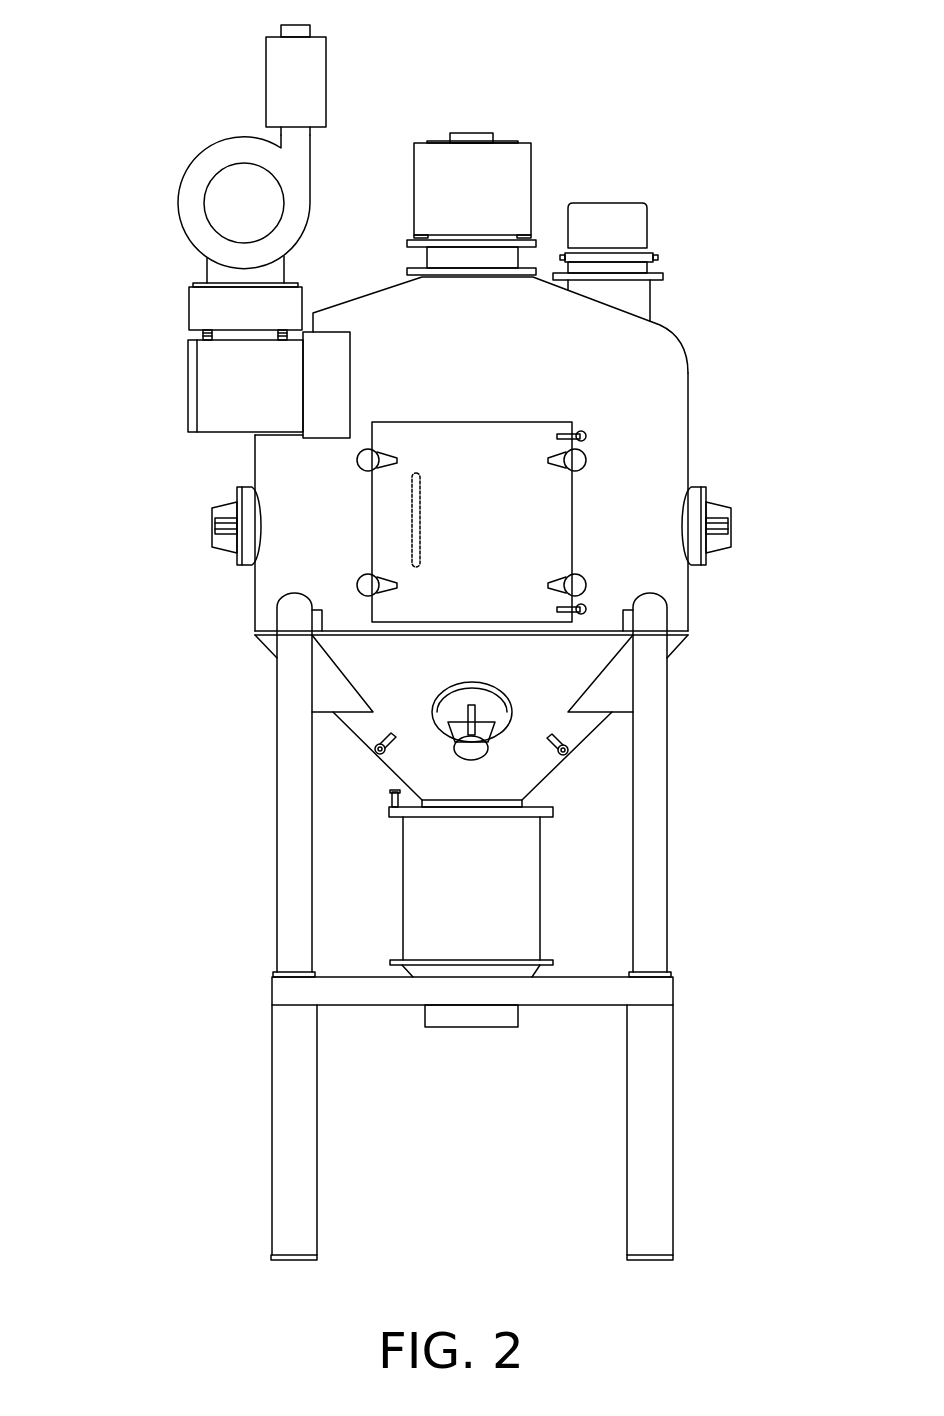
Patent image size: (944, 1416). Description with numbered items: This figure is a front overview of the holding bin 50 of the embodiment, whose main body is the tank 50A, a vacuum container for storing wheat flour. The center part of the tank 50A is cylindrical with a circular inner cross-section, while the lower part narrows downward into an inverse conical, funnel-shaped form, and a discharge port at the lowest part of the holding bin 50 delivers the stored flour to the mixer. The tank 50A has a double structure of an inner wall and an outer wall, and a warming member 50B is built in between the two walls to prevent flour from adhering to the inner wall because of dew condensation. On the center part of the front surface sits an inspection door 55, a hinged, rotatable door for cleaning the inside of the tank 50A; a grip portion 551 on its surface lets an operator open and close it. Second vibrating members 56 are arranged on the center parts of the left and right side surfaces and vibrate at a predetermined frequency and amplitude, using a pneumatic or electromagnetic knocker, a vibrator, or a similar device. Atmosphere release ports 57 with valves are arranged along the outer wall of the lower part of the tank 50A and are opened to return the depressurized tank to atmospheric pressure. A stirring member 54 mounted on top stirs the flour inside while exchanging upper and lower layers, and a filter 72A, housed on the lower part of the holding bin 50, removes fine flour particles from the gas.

The holding bin 50 is at (451, 630).
The tank 50A is at (540, 419).
The warming member 50B is at (658, 387).
The stirring member 54 is at (513, 180).
The inspection door 55 is at (550, 537).
The grip portion 551 is at (412, 522).
The second vibrating member 56 is at (215, 510).
The atmosphere release port 57 is at (373, 752).
The filter 72A is at (220, 388).